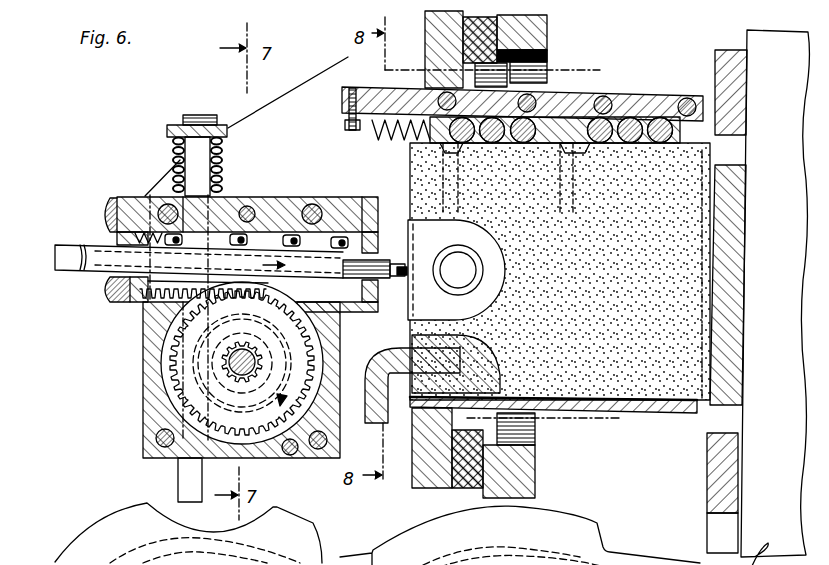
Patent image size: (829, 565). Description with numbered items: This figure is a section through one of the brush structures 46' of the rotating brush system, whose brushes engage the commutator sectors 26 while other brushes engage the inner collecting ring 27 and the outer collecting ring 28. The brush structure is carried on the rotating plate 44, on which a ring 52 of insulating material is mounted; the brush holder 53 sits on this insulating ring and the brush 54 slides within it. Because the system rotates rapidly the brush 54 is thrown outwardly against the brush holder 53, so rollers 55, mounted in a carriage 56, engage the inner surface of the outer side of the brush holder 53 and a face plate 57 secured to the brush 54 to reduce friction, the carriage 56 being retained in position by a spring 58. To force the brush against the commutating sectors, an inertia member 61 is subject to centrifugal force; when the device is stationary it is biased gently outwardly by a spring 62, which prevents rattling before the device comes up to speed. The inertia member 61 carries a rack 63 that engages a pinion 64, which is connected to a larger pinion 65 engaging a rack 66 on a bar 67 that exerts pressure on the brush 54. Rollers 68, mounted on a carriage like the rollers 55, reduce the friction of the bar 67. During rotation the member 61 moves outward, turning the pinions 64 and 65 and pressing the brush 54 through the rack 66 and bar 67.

The commutator sectors 26 is at (738, 307).
The inner collecting ring 27 is at (730, 472).
The outer collecting ring 28 is at (742, 61).
The plate 44 is at (530, 463).
The brush structure 46' is at (377, 288).
The ring 52 is at (548, 32).
The brush holder 53 is at (368, 87).
The brush 54 is at (560, 278).
The rollers 55 is at (655, 105).
The carriage 56 is at (580, 97).
The face plate 57 is at (582, 155).
The spring 58 is at (352, 132).
The inertia member 61 is at (180, 468).
The spring 62 is at (176, 168).
The rack 63 is at (218, 395).
The pinion 64 is at (255, 452).
The larger pinion 65 is at (312, 335).
The rack 66 is at (263, 286).
The bar 67 is at (102, 259).
The rollers 68 is at (262, 228).